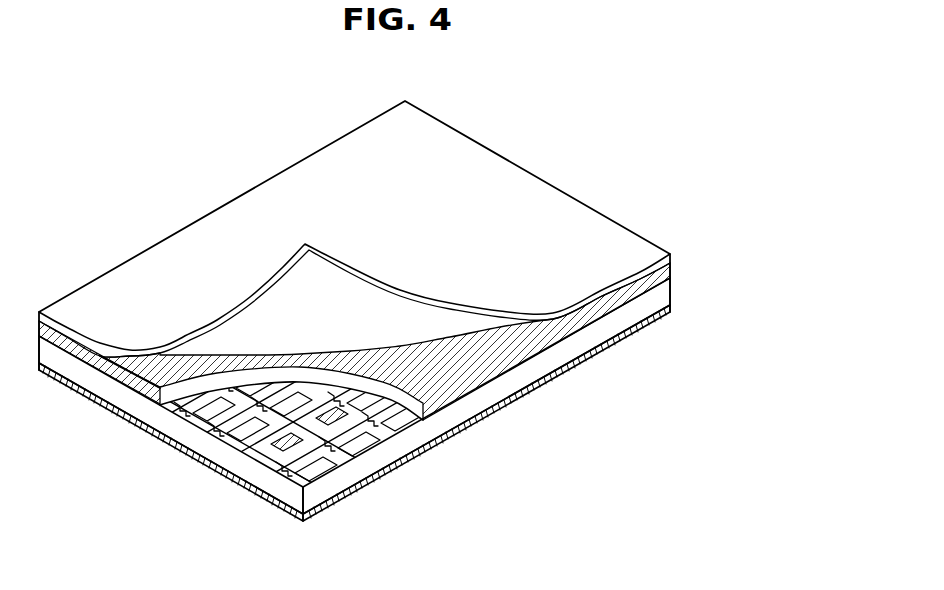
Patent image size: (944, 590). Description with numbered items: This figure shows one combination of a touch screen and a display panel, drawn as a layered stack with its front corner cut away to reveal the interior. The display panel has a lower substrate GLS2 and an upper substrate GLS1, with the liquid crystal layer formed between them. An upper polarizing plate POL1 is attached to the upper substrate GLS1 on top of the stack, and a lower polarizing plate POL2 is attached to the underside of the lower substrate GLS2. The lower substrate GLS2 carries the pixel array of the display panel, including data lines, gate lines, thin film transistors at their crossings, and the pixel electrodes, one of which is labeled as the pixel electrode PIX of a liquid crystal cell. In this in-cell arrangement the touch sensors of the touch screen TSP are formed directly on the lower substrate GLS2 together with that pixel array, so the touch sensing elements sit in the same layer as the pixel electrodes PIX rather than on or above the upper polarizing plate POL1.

The upper polarizing plate POL1 is at (670, 254).
The upper substrate GLS1 is at (667, 272).
The lower substrate GLS2 is at (665, 292).
The lower polarizing plate POL2 is at (670, 312).
The touch screen TSP is at (272, 449).
The pixel electrode PIX is at (298, 475).